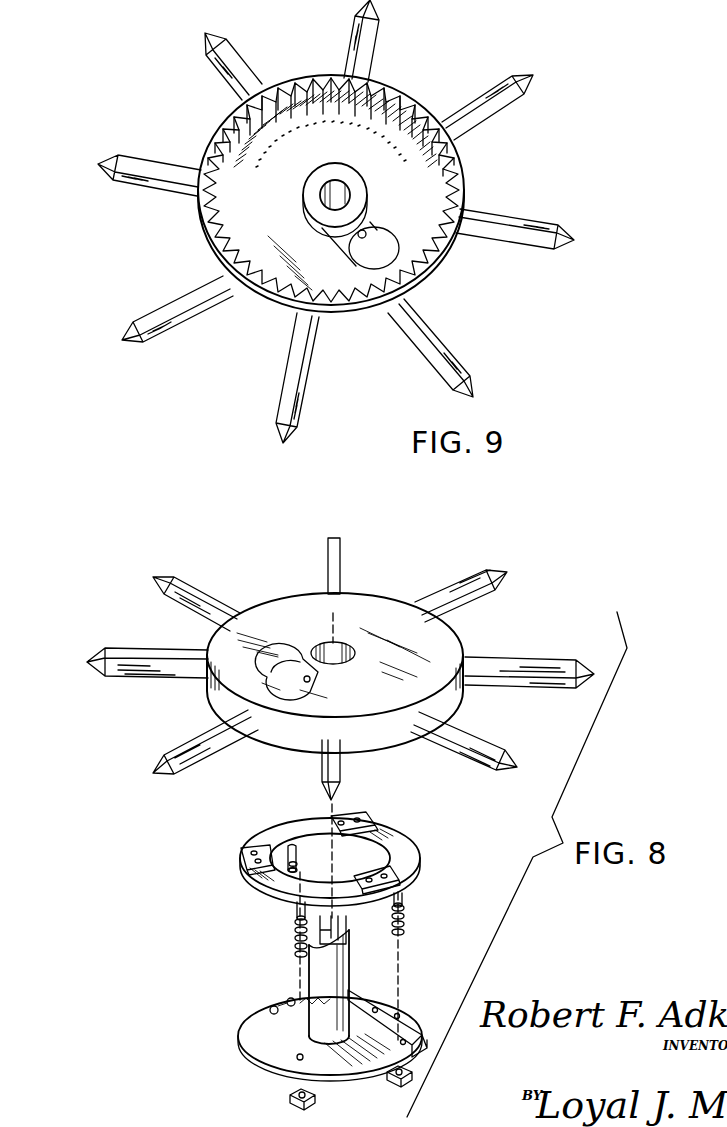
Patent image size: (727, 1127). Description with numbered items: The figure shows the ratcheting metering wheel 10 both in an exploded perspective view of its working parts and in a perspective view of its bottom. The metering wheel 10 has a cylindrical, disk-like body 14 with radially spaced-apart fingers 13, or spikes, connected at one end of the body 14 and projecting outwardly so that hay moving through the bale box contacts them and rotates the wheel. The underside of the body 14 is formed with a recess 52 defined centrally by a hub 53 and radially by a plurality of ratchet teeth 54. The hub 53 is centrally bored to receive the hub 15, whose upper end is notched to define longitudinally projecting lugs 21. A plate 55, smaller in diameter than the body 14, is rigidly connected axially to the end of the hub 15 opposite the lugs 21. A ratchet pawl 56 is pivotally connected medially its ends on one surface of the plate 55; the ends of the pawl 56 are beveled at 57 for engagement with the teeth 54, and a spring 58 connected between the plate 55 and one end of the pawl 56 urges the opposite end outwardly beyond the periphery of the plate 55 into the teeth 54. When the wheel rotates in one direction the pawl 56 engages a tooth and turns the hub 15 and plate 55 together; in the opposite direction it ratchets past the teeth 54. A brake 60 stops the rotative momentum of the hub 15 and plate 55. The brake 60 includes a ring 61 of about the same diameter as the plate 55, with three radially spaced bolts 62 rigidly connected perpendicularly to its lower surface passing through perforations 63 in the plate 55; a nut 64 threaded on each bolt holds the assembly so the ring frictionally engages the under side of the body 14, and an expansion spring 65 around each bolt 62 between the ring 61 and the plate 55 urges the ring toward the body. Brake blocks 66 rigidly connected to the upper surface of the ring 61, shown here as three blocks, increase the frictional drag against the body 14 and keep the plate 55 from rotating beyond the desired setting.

In FIG. 8, the metering wheel 10 is at (81, 596).
In FIG. 9, the fingers 13 is at (378, 58).
In FIG. 8, the fingers 13 is at (343, 566).
In FIG. 9, the body 14 is at (350, 328).
In FIG. 8, the body 14 is at (300, 634).
In FIG. 8, the hub 15 is at (351, 962).
In FIG. 8, the lugs 21 is at (346, 934).
In FIG. 9, the recess 52 is at (416, 188).
In FIG. 9, the hub 53 is at (353, 178).
In FIG. 9, the ratchet teeth 54 is at (240, 252).
In FIG. 8, the plate 55 is at (228, 1032).
In FIG. 8, the ratchet pawl 56 is at (410, 1022).
In FIG. 8, the beveled ends 57 is at (404, 1060).
In FIG. 8, the spring 58 is at (284, 1000).
In FIG. 8, the brake 60 is at (210, 877).
In FIG. 8, the ring 61 is at (273, 836).
In FIG. 8, the bolts 62 is at (298, 857).
In FIG. 8, the perforations 63 is at (296, 1058).
In FIG. 8, the nut 64 is at (312, 1100).
In FIG. 8, the expansion spring 65 is at (406, 934).
In FIG. 8, the brake blocks 66 is at (366, 818).